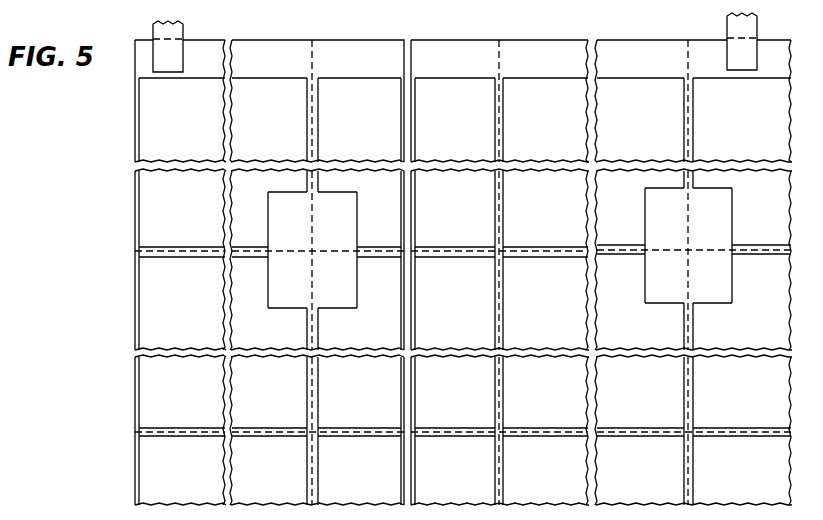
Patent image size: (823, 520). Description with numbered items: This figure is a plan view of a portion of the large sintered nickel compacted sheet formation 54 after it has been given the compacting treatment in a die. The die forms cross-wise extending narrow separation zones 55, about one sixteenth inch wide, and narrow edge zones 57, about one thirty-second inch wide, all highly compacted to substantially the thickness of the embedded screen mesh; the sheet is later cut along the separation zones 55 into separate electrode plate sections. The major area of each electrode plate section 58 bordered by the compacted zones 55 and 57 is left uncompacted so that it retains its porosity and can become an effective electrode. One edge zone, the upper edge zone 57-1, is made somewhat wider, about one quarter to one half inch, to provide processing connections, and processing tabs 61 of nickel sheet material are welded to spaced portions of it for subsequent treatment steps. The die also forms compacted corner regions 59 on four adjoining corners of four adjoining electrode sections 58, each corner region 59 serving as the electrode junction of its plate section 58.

The compacted sheet formation 54 is at (130, 381).
The separation zones 55 is at (318, 130).
The edge zones 57 is at (137, 218).
The upper edge zone 57-1 is at (256, 50).
The electrode plate section 58 is at (169, 135).
The compacted corner region 59 is at (280, 231).
The processing tabs 61 is at (156, 32).